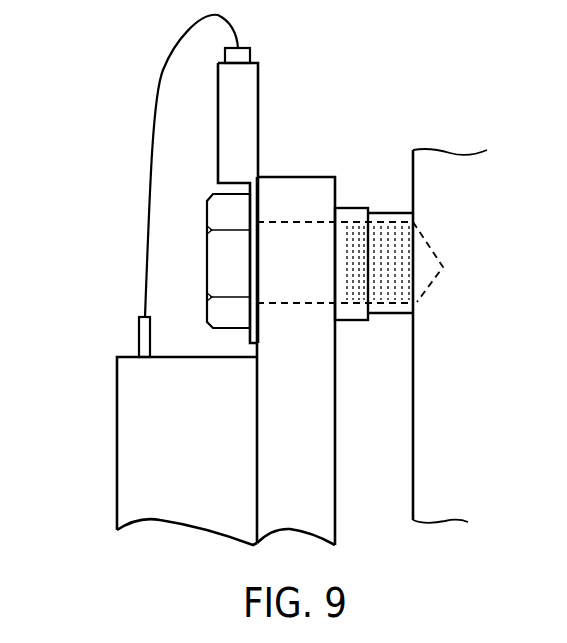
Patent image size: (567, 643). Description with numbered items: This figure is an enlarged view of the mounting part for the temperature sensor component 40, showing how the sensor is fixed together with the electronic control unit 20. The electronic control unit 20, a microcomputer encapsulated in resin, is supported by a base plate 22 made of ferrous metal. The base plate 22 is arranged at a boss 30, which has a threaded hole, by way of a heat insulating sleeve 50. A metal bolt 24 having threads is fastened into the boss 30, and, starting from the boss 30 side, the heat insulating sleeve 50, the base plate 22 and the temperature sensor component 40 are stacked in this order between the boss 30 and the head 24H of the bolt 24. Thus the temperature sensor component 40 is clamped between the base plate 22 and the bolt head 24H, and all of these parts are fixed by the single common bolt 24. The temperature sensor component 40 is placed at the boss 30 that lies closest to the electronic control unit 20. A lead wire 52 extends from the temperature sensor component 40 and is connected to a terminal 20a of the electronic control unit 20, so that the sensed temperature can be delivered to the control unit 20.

The electronic control unit 20 is at (117, 490).
The terminal 20a is at (139, 337).
The base plate 22 is at (288, 177).
The bolt 24 is at (312, 303).
The bolt head 24H is at (213, 198).
The boss 30 is at (383, 213).
The temperature sensor component 40 is at (267, 87).
The heat insulating sleeve 50 is at (348, 208).
The lead wire 52 is at (163, 42).